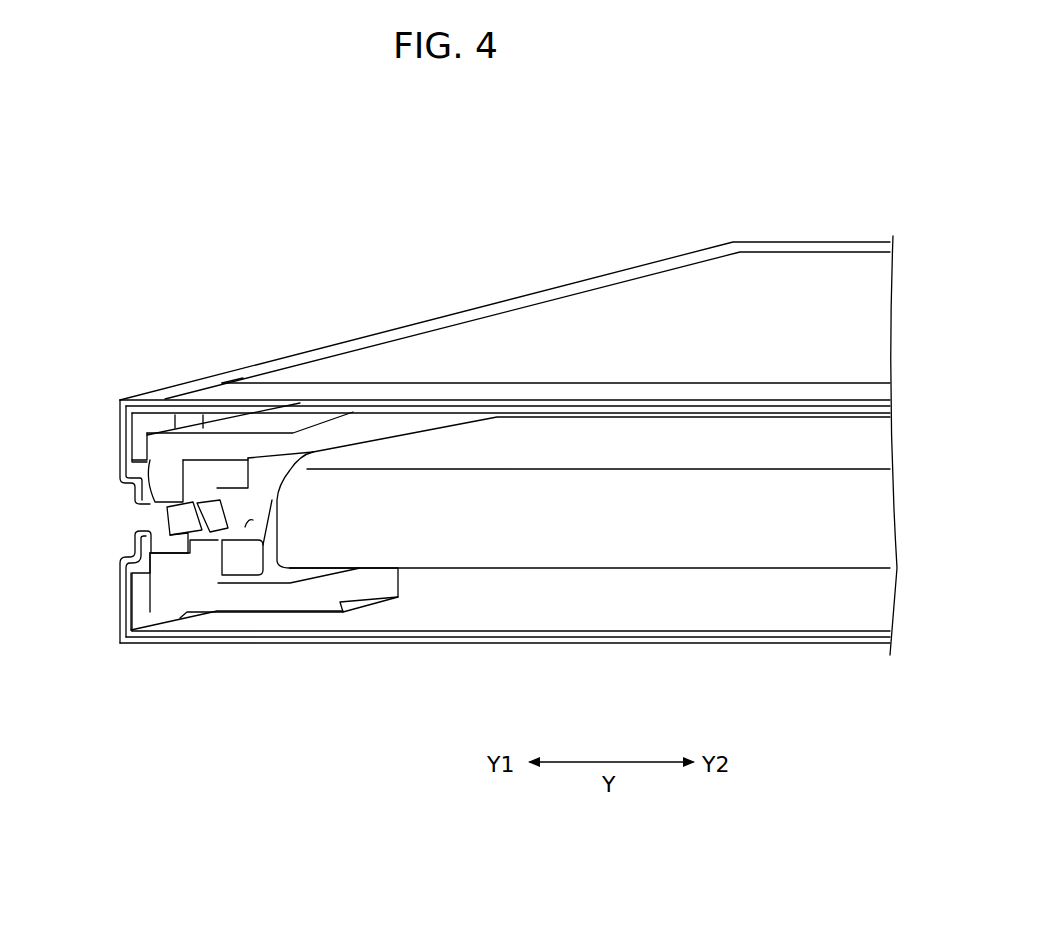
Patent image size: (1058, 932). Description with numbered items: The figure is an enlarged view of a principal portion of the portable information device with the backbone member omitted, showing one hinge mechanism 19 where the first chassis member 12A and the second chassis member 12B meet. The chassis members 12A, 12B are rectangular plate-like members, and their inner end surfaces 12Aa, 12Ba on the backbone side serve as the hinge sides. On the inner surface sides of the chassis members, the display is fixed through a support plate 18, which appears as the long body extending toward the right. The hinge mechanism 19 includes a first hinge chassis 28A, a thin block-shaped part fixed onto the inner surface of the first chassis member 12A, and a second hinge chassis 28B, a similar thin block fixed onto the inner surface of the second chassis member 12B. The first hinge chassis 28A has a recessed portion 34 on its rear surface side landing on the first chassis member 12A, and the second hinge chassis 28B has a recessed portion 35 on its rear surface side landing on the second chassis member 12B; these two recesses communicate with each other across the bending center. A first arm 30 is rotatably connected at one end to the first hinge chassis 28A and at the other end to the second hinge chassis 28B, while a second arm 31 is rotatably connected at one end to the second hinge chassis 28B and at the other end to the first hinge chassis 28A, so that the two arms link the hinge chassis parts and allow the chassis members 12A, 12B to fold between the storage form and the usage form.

The first chassis member 12A is at (537, 320).
The inner end surface 12Aa is at (611, 410).
The second chassis member 12B is at (533, 652).
The inner end surface 12Ba is at (420, 645).
The support plate 18 is at (601, 570).
The hinge mechanism 19 is at (105, 533).
The first hinge chassis 28A is at (240, 447).
The second hinge chassis 28B is at (215, 598).
The first arm 30 is at (245, 505).
The second arm 31 is at (177, 517).
The recessed portion 34 is at (210, 418).
The recessed portion 35 is at (327, 608).